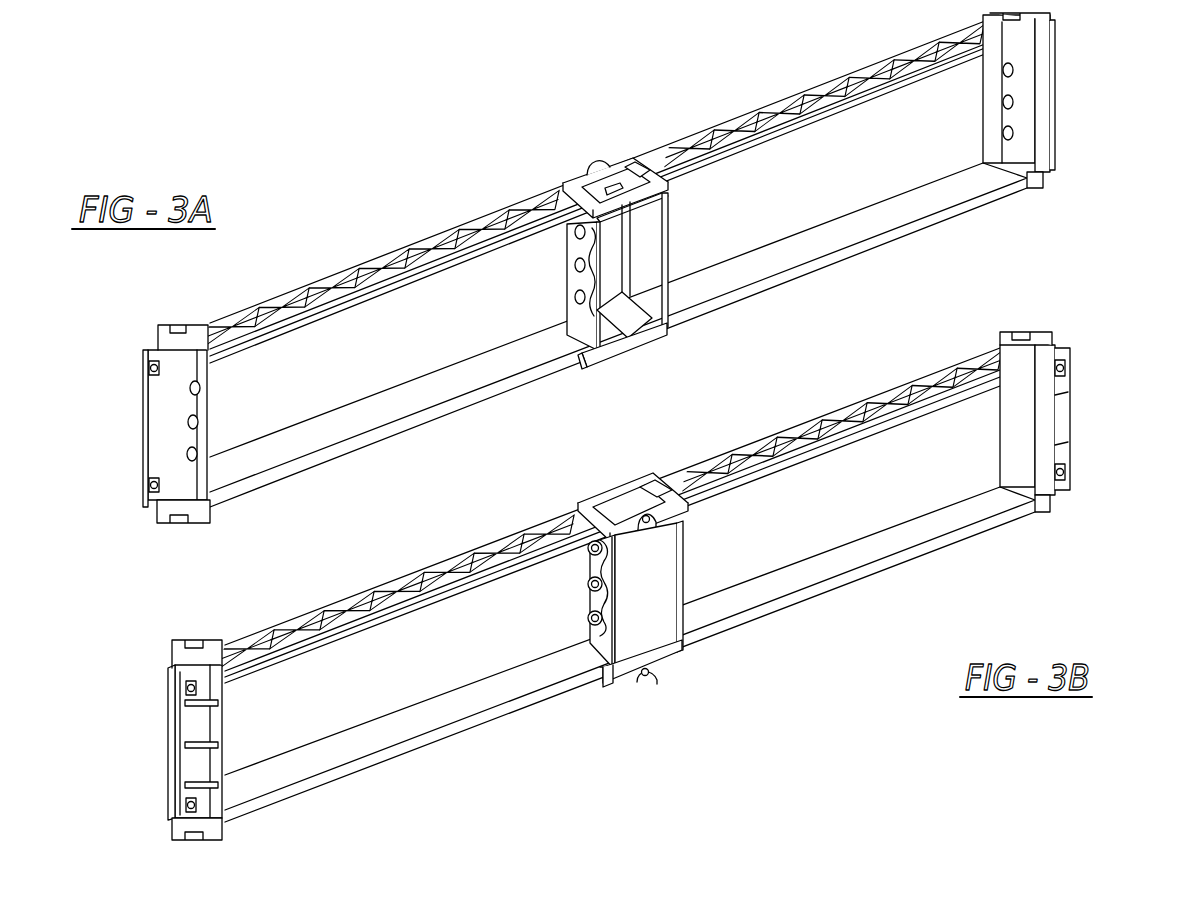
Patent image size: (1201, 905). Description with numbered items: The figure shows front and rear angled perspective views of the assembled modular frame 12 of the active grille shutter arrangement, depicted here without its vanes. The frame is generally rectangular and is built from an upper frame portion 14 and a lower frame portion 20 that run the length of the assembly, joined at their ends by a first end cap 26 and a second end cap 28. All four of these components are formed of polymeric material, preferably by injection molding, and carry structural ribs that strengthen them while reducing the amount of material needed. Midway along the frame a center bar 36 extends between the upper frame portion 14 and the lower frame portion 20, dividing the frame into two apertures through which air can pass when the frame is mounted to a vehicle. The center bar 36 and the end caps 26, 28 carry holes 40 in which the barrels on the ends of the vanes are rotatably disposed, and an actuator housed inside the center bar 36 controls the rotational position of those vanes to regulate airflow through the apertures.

In FIG. 3A, the assembled modular frame 12 is at (352, 175).
In FIG. 3B, the assembled modular frame 12 is at (1102, 318).
In FIG. 3A, the upper frame portion 14 is at (808, 95).
In FIG. 3B, the upper frame portion 14 is at (778, 430).
In FIG. 3A, the lower frame portion 20 is at (374, 410).
In FIG. 3B, the lower frame portion 20 is at (424, 728).
In FIG. 3A, the first end cap 26 is at (1055, 92).
In FIG. 3B, the first end cap 26 is at (195, 726).
In FIG. 3A, the second end cap 28 is at (155, 407).
In FIG. 3B, the second end cap 28 is at (1070, 398).
In FIG. 3B, the center bar 36 is at (665, 602).
In FIG. 3B, the holes 40 is at (595, 548).